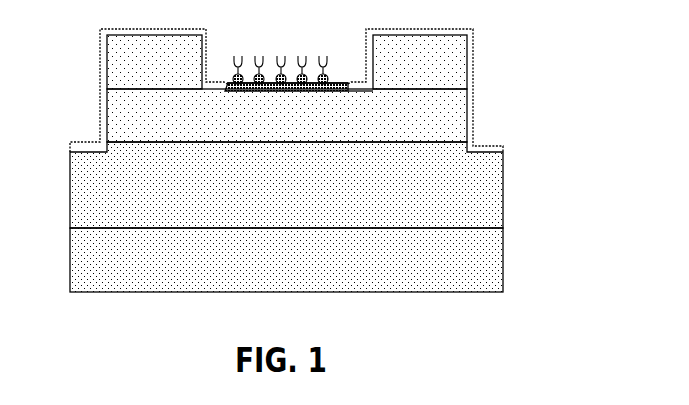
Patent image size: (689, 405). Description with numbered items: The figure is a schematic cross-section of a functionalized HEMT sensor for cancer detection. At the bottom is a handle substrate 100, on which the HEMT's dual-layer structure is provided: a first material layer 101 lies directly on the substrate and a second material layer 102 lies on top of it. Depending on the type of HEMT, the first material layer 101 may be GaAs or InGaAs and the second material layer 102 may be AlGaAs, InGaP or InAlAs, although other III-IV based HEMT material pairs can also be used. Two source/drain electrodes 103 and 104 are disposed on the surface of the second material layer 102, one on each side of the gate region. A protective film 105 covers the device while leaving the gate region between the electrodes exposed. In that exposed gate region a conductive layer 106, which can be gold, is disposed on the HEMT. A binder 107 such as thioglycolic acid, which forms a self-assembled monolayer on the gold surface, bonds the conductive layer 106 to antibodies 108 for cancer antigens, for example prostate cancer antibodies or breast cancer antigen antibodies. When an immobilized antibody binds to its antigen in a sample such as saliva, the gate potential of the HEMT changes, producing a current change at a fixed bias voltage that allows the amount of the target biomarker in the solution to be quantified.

The handle substrate 100 is at (490, 262).
The first material layer 101 is at (490, 200).
The second material layer 102 is at (452, 133).
The source/drain electrode 103 is at (183, 53).
The source/drain electrode 104 is at (466, 82).
The protective film 105 is at (471, 105).
The conductive layer 106 is at (342, 83).
The binder 107 is at (328, 80).
The antibodies 108 is at (260, 55).